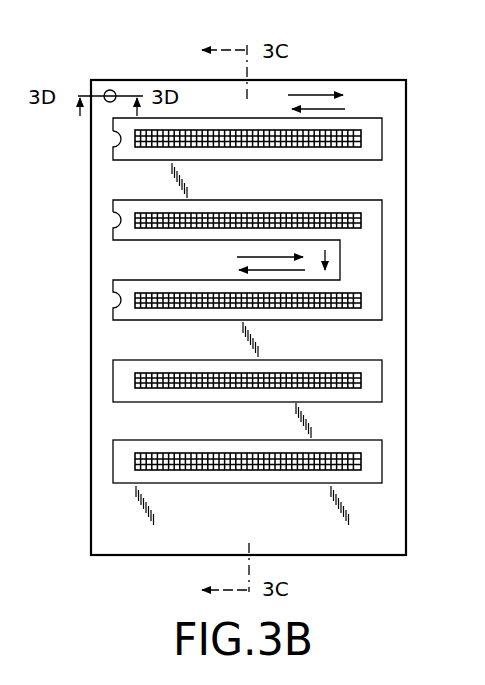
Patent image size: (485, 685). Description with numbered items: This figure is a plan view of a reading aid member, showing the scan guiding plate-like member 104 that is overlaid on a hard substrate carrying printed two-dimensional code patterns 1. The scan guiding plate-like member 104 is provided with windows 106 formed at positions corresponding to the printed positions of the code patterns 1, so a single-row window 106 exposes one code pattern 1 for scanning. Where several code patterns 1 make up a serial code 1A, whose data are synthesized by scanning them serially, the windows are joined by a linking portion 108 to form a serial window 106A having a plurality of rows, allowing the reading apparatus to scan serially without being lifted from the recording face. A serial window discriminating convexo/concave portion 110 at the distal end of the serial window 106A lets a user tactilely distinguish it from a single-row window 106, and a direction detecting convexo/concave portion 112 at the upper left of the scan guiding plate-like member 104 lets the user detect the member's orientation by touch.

The scan guiding plate-like member 104 is at (100, 467).
The direction detecting convexo/concave portion 112 is at (111, 90).
The serial window discriminating convexo/concave portion 110 is at (113, 298).
The serial window 106A is at (383, 243).
The linking portion 108 is at (368, 276).
The serial code 1A is at (361, 221).
The window 106 is at (113, 372).
The code pattern 1 is at (136, 392).